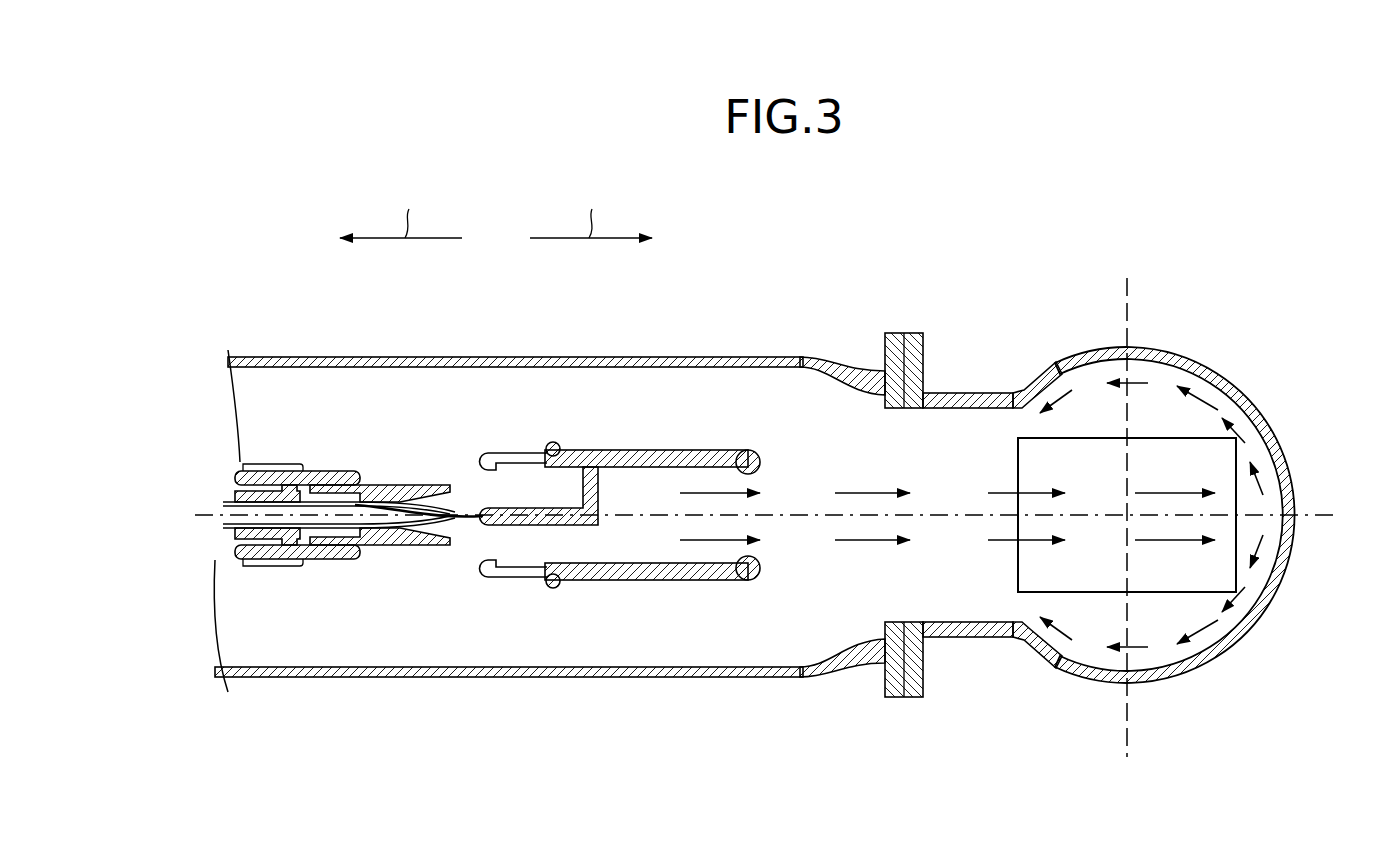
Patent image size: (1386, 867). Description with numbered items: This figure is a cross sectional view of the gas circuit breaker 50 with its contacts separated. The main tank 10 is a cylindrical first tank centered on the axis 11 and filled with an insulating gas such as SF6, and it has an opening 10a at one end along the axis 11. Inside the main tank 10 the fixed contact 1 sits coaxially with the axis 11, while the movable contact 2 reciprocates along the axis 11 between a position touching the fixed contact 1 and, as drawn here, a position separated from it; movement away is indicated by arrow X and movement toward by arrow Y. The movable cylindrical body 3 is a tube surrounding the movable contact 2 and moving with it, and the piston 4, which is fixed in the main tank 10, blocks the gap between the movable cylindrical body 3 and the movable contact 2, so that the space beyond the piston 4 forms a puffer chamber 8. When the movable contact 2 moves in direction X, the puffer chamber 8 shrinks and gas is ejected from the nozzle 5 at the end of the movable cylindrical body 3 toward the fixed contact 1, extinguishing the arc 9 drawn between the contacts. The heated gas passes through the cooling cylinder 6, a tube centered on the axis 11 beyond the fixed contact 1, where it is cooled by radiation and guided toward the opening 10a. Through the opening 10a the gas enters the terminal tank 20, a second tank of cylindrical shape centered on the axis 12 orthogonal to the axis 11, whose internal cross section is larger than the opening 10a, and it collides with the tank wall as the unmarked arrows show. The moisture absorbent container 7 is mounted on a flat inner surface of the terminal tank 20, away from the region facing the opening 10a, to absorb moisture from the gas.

The gas circuit breaker 50 is at (758, 236).
The fixed contact 1 is at (514, 508).
The movable contact 2 is at (318, 492).
The movable cylindrical body 3 is at (332, 540).
The piston 4 is at (246, 548).
The nozzle 5 is at (415, 545).
The cooling cylinder 6 is at (655, 450).
The moisture absorbent container 7 is at (1092, 437).
The puffer chamber 8 is at (305, 473).
The arc 9 is at (468, 520).
The main tank 10 is at (431, 357).
The opening 10a is at (882, 392).
The axis 11 is at (1337, 513).
The axis 12 is at (1130, 520).
The terminal tank 20 is at (1217, 372).